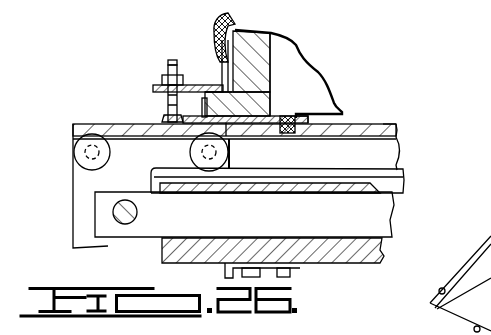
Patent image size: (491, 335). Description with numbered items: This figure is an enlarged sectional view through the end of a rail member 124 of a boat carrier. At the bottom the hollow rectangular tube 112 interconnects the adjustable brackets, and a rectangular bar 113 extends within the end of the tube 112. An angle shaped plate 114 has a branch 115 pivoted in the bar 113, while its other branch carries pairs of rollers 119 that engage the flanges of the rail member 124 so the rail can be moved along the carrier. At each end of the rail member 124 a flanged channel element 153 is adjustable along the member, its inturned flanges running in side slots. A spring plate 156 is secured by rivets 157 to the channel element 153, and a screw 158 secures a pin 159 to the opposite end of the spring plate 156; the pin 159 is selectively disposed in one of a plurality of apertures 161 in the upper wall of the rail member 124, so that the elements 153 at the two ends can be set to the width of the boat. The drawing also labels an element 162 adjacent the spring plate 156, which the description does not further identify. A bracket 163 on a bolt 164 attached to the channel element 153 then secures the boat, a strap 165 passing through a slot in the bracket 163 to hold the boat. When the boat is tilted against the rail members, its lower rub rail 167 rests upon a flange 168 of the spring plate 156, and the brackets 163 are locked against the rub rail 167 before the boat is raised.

The hollow rectangular tube 112 is at (365, 256).
The rectangular bar 113 is at (373, 210).
The angle shaped plate 114 is at (72, 220).
The branch 115 is at (125, 224).
The rollers 119 is at (84, 160).
The rail member 124 is at (398, 124).
The flanged channel element 153 is at (160, 124).
The spring plate 156 is at (278, 112).
The rivets 157 is at (231, 133).
The screw 158 is at (306, 113).
The pin 159 is at (284, 134).
The apertures 161 is at (385, 124).
The housing 162 is at (273, 106).
The bracket 163 is at (213, 68).
The bolt 164 is at (166, 68).
The strap 165 is at (238, 30).
The rub rail 167 is at (228, 102).
The flange 168 is at (186, 118).